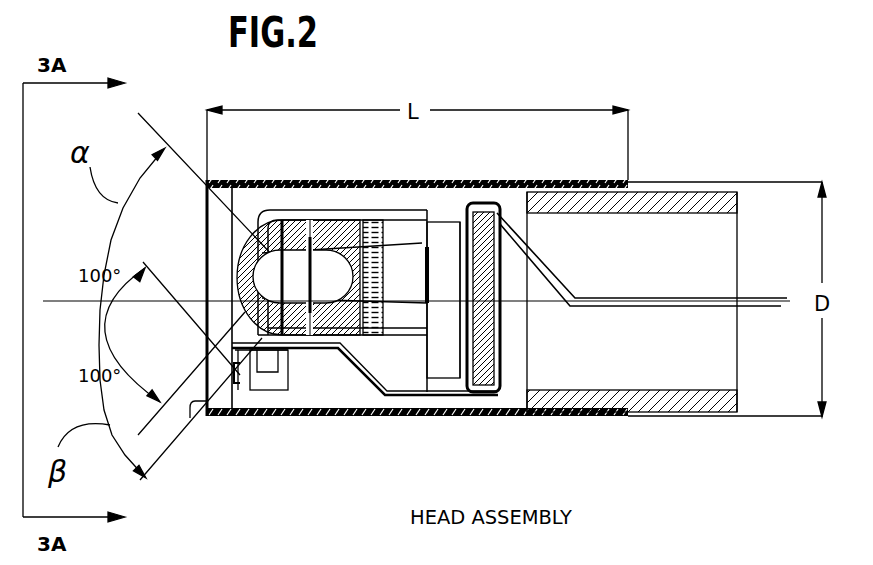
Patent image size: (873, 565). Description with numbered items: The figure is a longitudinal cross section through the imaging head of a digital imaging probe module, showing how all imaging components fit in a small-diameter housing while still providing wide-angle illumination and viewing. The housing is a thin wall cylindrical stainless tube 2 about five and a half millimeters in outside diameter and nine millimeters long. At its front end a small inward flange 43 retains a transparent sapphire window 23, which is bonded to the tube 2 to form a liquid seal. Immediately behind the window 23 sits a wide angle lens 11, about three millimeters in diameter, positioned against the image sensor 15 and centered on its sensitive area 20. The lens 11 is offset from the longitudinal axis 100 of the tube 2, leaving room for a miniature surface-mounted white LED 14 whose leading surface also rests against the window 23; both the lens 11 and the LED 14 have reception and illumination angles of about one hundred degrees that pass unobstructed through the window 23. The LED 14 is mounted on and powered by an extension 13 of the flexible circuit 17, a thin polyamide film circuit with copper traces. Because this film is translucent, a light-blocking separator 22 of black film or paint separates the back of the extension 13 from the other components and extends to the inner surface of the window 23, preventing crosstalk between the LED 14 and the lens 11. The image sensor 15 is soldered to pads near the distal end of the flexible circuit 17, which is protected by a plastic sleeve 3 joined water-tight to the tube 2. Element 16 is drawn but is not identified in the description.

The thin wall cylindrical stainless tube 2 is at (380, 420).
The plastic sleeve 3 is at (653, 407).
The wide angle lens 11 is at (280, 212).
The extension of the flexible circuit 13 is at (363, 370).
The miniature surface-mounted white LED 14 is at (275, 390).
The image sensor 15 is at (443, 377).
The circuit board 16 is at (480, 320).
The flexible circuit 17 is at (612, 298).
The sensitive area 20 is at (427, 266).
The light-blocking separator 22 is at (245, 325).
The transparent sapphire window 23 is at (207, 238).
The inward flange 43 is at (200, 402).
The longitudinal axis 100 is at (800, 303).